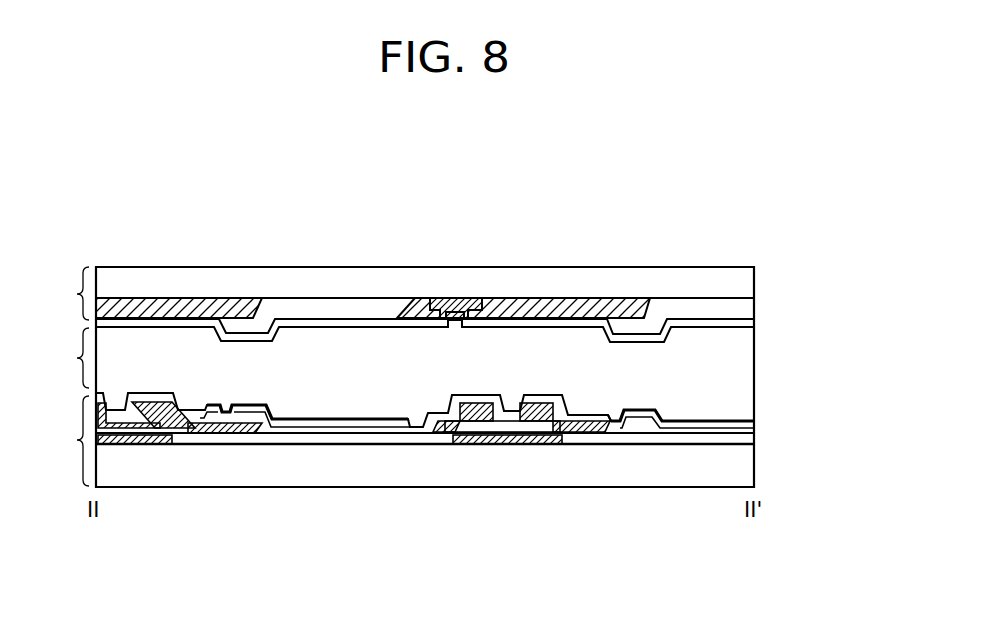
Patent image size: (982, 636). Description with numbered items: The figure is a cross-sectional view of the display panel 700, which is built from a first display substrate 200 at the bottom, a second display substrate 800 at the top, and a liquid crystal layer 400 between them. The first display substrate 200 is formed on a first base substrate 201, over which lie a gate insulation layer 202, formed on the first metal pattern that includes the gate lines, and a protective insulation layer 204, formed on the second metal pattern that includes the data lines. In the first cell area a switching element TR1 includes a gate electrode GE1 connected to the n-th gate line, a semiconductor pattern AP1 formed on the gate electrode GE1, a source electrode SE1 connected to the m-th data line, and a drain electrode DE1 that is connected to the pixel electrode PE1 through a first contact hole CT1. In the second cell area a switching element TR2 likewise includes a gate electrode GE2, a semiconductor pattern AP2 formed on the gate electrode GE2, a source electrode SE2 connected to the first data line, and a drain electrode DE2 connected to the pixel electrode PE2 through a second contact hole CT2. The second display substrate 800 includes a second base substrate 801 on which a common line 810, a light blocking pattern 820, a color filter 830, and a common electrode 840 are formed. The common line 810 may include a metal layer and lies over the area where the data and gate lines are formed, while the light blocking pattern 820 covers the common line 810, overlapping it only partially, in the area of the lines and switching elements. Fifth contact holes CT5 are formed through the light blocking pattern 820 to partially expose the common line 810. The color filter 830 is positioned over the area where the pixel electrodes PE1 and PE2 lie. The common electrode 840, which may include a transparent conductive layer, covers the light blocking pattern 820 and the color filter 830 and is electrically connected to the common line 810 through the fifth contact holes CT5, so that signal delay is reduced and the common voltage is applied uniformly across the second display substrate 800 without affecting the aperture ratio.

The display panel 700 is at (446, 177).
The second base substrate 801 is at (748, 284).
The color filter 830 is at (722, 303).
The common electrode 840 is at (748, 323).
The light blocking pattern 820 is at (174, 298).
The common line 810 is at (458, 298).
The fifth contact hole CT5 is at (455, 326).
The second display substrate 800 is at (62, 293).
The liquid crystal layer 400 is at (62, 358).
The first display substrate 200 is at (62, 441).
The first base substrate 201 is at (748, 467).
The gate insulation layer 202 is at (750, 444).
The protective insulation layer 204 is at (750, 427).
The pixel electrode PE1 is at (315, 418).
The first contact hole CT1 is at (226, 405).
The pixel electrode PE2 is at (703, 420).
The second contact hole CT2 is at (613, 419).
The switching element TR1 is at (174, 498).
The gate electrode GE1 is at (130, 444).
The source electrode SE1 is at (97, 430).
The semiconductor pattern AP1 is at (146, 432).
The drain electrode DE1 is at (226, 490).
The switching element TR2 is at (527, 498).
The gate electrode GE2 is at (489, 445).
The semiconductor pattern AP2 is at (530, 425).
The source electrode SE2 is at (437, 432).
The drain electrode DE2 is at (571, 480).